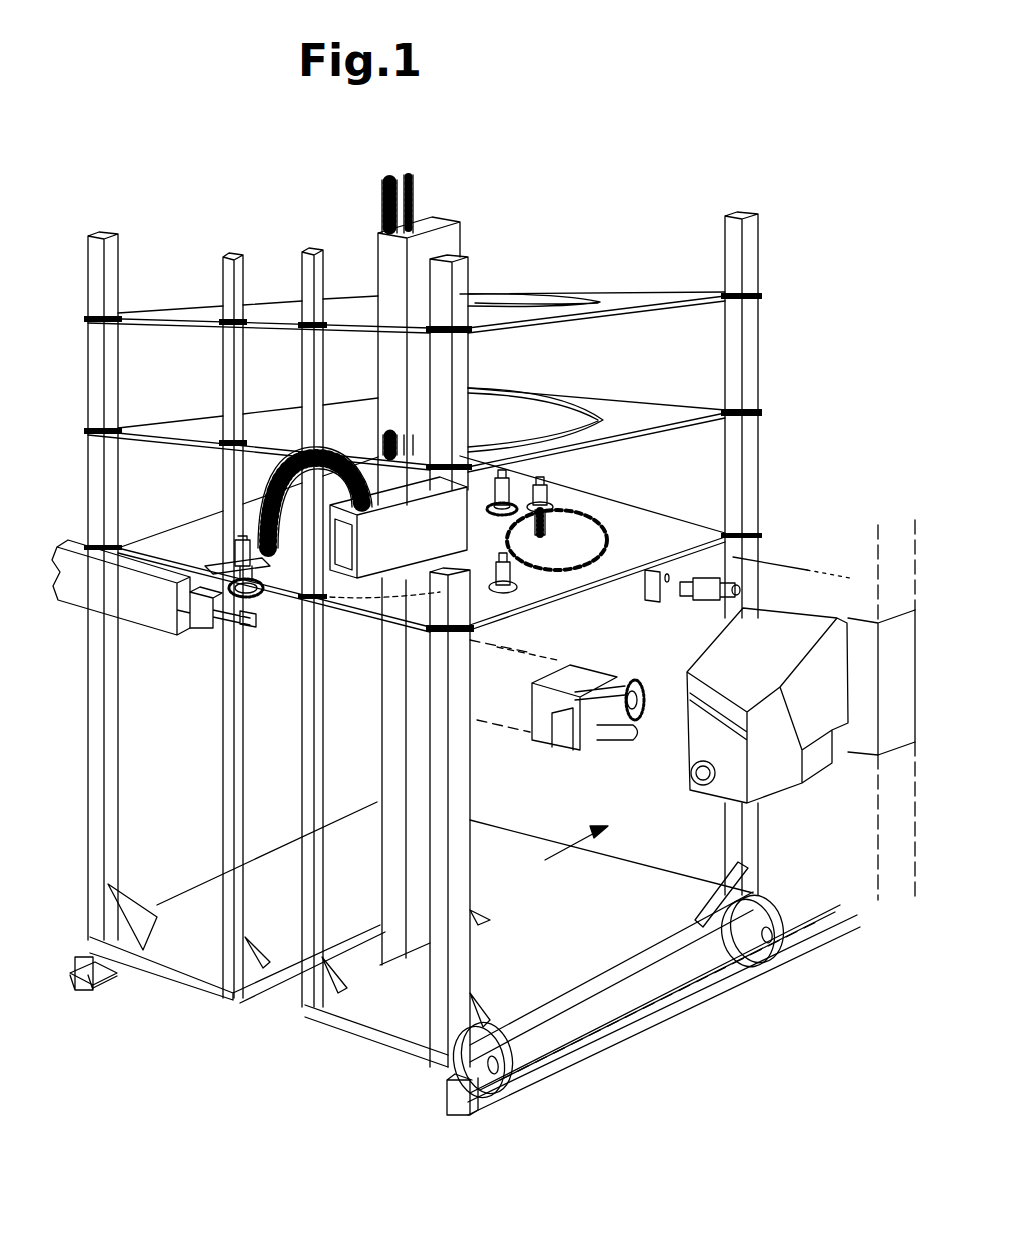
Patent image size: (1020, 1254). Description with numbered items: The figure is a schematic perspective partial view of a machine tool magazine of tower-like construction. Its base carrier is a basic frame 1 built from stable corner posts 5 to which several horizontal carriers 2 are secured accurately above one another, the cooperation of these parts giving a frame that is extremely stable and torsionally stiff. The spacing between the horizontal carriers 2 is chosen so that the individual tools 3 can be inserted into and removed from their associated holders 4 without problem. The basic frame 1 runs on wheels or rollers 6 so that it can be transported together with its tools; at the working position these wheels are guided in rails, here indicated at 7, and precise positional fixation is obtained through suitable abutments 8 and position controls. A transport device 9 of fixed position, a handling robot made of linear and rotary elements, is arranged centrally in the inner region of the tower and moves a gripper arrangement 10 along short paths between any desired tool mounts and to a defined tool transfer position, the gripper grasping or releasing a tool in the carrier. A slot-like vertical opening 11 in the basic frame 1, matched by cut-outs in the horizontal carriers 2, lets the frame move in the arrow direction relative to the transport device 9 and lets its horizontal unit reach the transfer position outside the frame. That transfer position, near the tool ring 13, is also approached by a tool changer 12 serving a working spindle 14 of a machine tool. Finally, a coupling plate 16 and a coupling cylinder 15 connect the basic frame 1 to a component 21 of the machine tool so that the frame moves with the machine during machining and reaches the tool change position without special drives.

The basic frame 1 is at (768, 348).
The horizontal carriers 2 is at (602, 300).
The tools 3 is at (255, 598).
The holders 4 is at (595, 512).
The corner posts 5 is at (468, 275).
The wheels or rollers 6 is at (115, 965).
The rail 7 is at (105, 990).
The abutments 8 is at (82, 955).
The transport device 9 is at (370, 570).
The gripper arrangement 10 is at (240, 540).
The vertical opening 11 is at (262, 833).
The tool changer 12 is at (215, 625).
The turntable chain 13 is at (620, 535).
The working spindle 14 is at (770, 776).
The coupling cylinder 15 is at (703, 603).
The coupling plate 16 is at (655, 603).
The component of the machine tool 21 is at (817, 597).